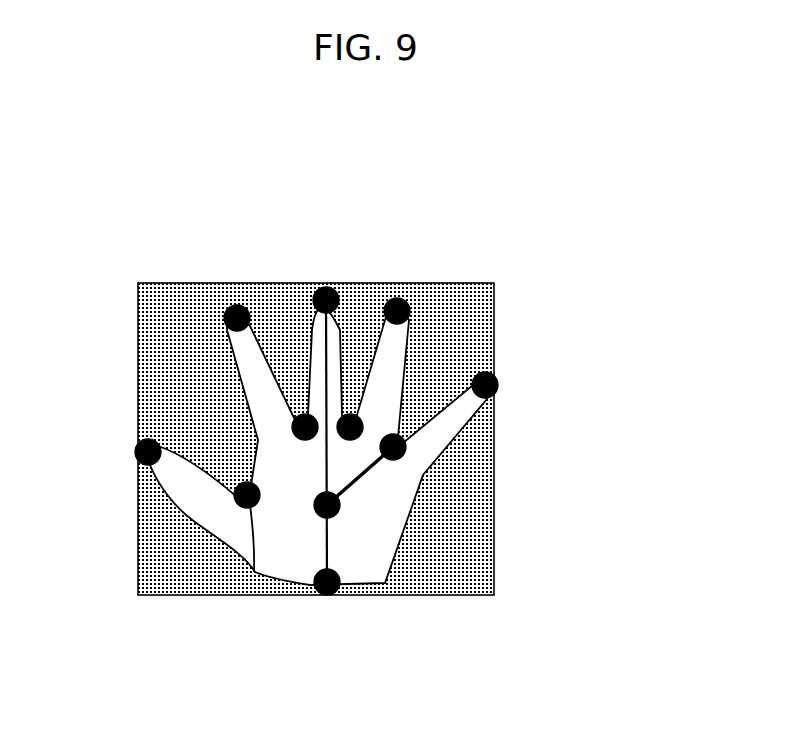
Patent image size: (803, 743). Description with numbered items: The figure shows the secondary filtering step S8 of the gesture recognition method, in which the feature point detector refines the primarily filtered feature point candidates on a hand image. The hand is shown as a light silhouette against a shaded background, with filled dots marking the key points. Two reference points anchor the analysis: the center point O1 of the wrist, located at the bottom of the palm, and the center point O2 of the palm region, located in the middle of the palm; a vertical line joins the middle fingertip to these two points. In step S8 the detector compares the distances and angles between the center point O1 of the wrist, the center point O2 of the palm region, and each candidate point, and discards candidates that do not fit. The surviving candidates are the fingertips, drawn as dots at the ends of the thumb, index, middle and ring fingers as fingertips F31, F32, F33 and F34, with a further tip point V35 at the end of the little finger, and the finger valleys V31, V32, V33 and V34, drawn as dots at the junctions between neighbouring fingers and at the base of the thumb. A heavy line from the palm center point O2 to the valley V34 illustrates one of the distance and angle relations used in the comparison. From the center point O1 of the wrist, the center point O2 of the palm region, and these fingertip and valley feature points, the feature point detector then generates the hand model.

The secondary filtering step S8 is at (471, 178).
The fingertip F31 is at (148, 452).
The fingertip F32 is at (237, 318).
The fingertip F33 is at (326, 300).
The fingertip F34 is at (397, 311).
The finger valley V31 is at (255, 572).
The finger valley V32 is at (305, 427).
The finger valley V33 is at (350, 427).
The finger valley V34 is at (393, 447).
The little fingertip point V35 is at (498, 383).
The center point of the wrist O1 is at (327, 582).
The center point of the palm region O2 is at (327, 505).